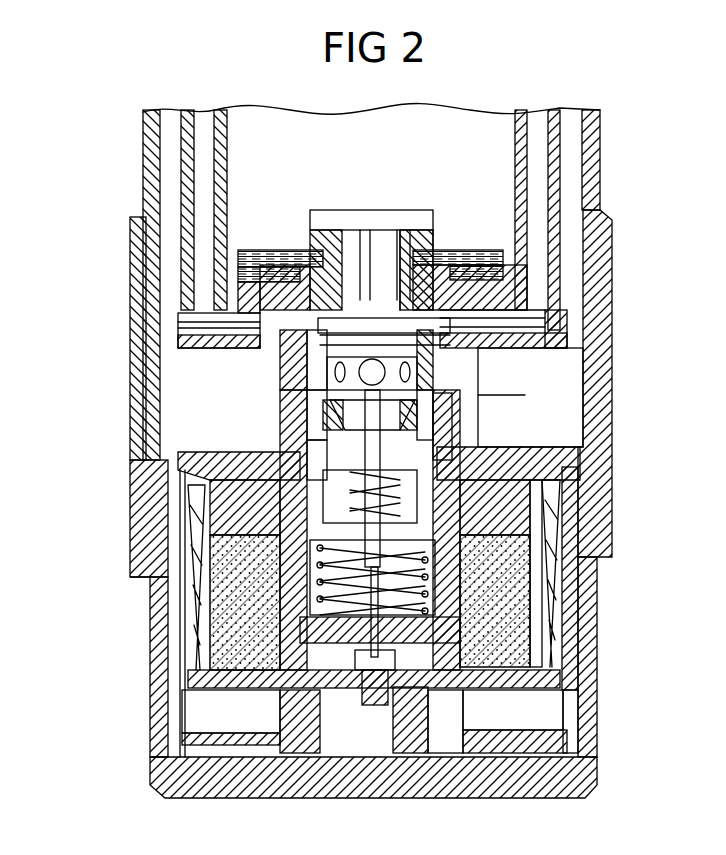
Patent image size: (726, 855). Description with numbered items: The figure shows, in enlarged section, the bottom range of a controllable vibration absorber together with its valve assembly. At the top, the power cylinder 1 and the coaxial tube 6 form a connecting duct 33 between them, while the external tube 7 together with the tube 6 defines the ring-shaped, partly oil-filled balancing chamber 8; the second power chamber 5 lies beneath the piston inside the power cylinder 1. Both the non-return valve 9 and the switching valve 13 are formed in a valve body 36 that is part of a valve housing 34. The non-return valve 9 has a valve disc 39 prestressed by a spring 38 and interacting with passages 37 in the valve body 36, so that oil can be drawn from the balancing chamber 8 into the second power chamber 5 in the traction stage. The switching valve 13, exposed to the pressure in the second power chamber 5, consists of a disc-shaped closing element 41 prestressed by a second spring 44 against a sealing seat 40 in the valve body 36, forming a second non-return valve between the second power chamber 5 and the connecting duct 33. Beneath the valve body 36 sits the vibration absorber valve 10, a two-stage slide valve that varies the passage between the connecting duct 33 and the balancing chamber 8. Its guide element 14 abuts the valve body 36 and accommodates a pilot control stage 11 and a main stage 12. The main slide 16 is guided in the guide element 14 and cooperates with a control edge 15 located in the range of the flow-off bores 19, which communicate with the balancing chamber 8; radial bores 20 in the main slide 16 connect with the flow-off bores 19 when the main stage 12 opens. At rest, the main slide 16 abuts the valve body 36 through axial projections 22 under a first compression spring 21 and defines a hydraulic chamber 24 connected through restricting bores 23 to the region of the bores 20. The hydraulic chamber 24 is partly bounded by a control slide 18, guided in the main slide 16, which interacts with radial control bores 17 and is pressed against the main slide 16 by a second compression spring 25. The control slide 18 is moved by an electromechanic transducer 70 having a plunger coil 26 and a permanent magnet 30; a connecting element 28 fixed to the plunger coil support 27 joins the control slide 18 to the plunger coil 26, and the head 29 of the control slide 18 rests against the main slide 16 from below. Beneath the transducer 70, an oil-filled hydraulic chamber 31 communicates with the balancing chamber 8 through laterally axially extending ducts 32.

The power cylinder 1 is at (520, 130).
The second power chamber 5 is at (255, 130).
The tube 6 is at (555, 130).
The external tube 7 is at (590, 130).
The balancing chamber 8 is at (165, 130).
The non-return valve 9 is at (480, 250).
The vibration absorber valve 10 is at (525, 392).
The pilot control stage 11 is at (320, 545).
The main stage 12 is at (478, 403).
The switching valve 13 is at (392, 210).
The guide element 14 is at (200, 468).
The control edge 15 is at (310, 345).
The main slide 16 is at (350, 520).
The control bores 17 is at (452, 425).
The control slide 18 is at (438, 465).
The flow-off bores 19 is at (300, 430).
The radial bores 20 is at (355, 290).
The first compression spring 21 is at (425, 605).
The axial projections 22 is at (372, 260).
The restricting bores 23 is at (402, 262).
The hydraulic chamber 24 is at (290, 405).
The second compression spring 25 is at (335, 632).
The plunger coil 26 is at (550, 632).
The plunger coil support 27 is at (530, 662).
The connecting element 28 is at (560, 560).
The head 29 is at (310, 380).
The permanent magnet 30 is at (545, 592).
The hydraulic chamber 31 is at (530, 702).
The ducts 32 is at (160, 660).
The connecting duct 33 is at (595, 198).
The valve housing 34 is at (185, 442).
The valve body 36 is at (520, 290).
The passages 37 is at (250, 300).
The spring 38 is at (245, 258).
The valve disc 39 is at (245, 272).
The sealing seat 40 is at (322, 215).
The closing element 41 is at (515, 330).
The second spring 44 is at (250, 327).
The electromechanic transducer 70 is at (195, 612).